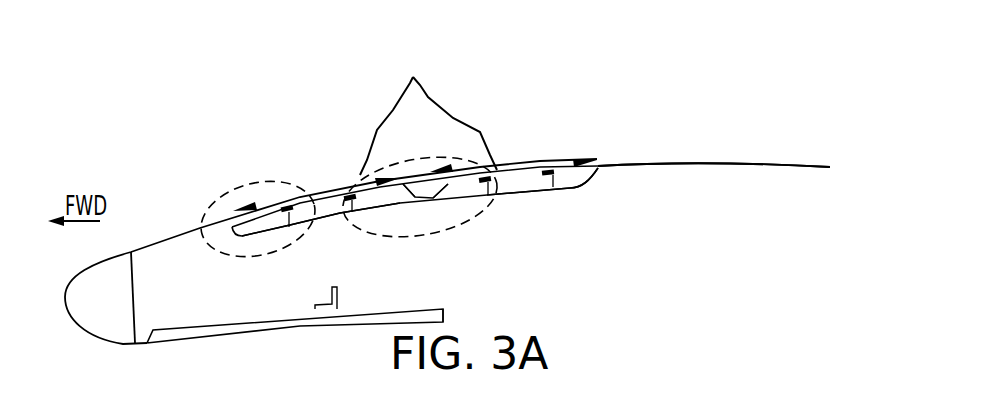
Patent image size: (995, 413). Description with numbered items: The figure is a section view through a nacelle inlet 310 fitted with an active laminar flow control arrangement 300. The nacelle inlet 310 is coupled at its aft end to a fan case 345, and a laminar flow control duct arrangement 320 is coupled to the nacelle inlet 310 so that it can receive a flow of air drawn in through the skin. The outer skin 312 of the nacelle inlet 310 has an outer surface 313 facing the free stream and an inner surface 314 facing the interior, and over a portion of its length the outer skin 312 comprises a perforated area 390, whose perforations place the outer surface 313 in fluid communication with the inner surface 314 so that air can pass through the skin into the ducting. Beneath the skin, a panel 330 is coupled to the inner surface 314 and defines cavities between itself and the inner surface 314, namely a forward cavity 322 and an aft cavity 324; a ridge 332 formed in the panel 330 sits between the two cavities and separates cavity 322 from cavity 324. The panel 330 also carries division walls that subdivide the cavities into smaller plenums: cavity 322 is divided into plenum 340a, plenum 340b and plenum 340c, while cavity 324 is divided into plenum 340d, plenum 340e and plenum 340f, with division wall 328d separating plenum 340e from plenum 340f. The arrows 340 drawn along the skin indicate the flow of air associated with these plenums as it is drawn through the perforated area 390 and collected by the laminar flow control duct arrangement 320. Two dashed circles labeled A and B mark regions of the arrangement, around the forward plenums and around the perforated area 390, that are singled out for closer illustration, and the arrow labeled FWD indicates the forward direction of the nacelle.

The active laminar flow control arrangement 300 is at (251, 86).
The nacelle inlet 310 is at (145, 238).
The outer skin 312 is at (632, 163).
The outer surface 313 is at (180, 229).
The inner surface 314 is at (165, 243).
The laminar flow control duct arrangement 320 is at (607, 240).
The cavity 322 is at (334, 222).
The cavity 324 is at (503, 201).
The division wall 328d is at (561, 190).
The panel 330 is at (540, 190).
The ridge 332 is at (420, 183).
The airflow arrows 340 is at (638, 189).
The plenum 340a is at (268, 214).
The plenum 340b is at (317, 212).
The plenum 340c is at (383, 199).
The plenum 340d is at (457, 187).
The plenum 340e is at (517, 180).
The plenum 340f is at (567, 173).
The fan case 345 is at (446, 311).
The perforated area 390 is at (428, 112).
The detail region A is at (216, 197).
The detail region B is at (423, 153).